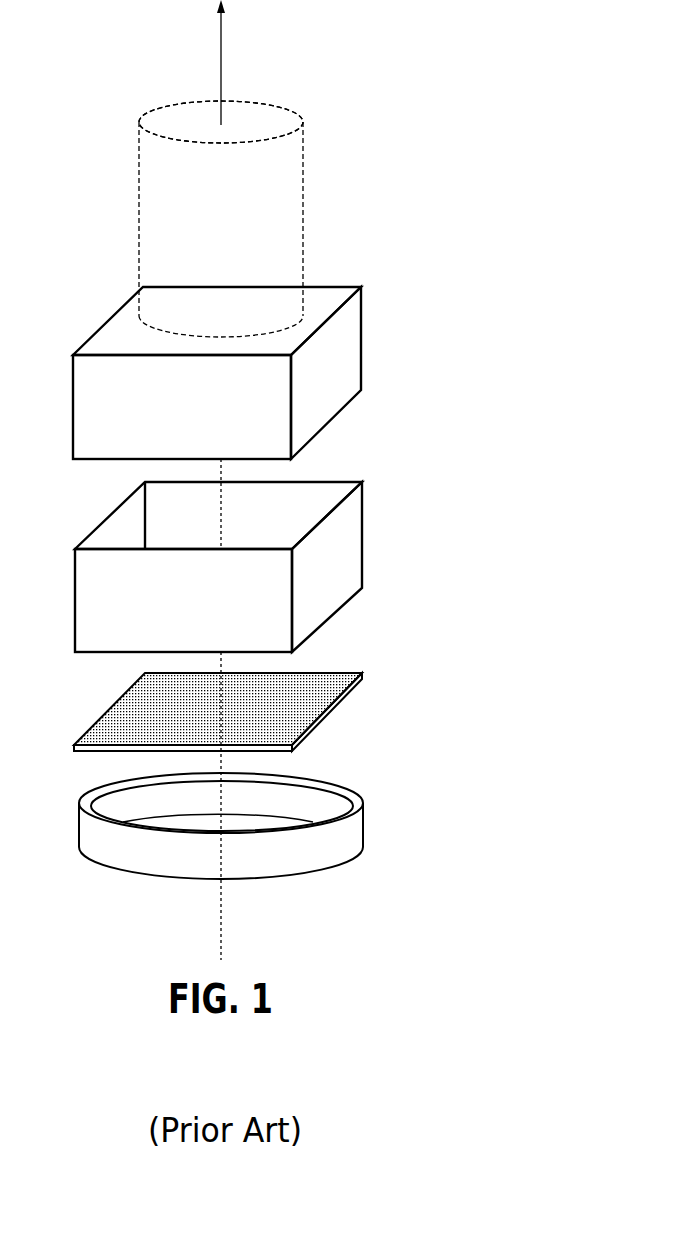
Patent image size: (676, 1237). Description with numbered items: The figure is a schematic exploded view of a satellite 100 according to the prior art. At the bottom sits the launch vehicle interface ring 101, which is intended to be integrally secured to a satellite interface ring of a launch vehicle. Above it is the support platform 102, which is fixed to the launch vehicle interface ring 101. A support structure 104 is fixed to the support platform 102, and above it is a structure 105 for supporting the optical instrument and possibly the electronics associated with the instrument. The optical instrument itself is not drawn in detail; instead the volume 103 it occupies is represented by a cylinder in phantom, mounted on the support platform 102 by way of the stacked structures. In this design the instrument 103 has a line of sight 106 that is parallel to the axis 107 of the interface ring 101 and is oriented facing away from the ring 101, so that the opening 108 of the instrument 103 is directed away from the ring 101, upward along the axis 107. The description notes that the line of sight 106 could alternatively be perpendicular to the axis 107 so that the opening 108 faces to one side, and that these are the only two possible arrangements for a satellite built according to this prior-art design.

The satellite 100 is at (448, 419).
The launch vehicle interface ring 101 is at (355, 838).
The support platform 102 is at (363, 673).
The optical instrument volume 103 is at (304, 195).
The support structure 104 is at (345, 536).
The structure for supporting the optical instrument 105 is at (345, 337).
The line of sight 106 is at (222, 60).
The axis of the interface ring 107 is at (222, 920).
The opening of the instrument 108 is at (169, 106).